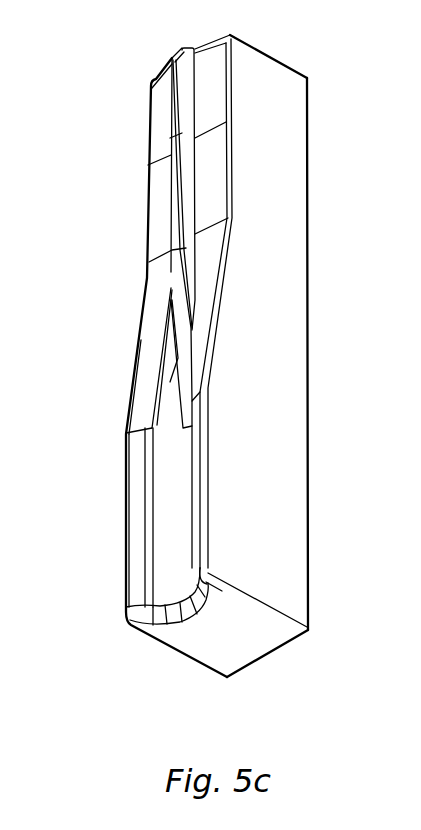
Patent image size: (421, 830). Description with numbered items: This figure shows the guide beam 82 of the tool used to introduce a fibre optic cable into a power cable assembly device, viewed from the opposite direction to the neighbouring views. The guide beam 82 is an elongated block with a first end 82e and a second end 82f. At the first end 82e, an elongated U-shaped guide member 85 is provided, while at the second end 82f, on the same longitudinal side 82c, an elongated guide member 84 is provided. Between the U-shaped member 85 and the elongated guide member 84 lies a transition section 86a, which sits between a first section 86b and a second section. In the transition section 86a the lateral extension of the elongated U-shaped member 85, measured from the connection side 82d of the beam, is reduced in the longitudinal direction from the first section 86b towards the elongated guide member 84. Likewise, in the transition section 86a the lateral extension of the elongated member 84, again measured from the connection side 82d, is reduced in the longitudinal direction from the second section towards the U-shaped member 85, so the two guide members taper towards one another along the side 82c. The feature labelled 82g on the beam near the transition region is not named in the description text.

The guide beam 82 is at (284, 326).
The longitudinal side 82c is at (127, 469).
The connection side 82d is at (309, 213).
The first end 82e is at (240, 642).
The second end 82f is at (268, 54).
The tab of block 82g is at (131, 385).
The elongated guide member 84 is at (163, 103).
The elongated U-shaped guide member 85 is at (165, 607).
The transition section 86a is at (118, 326).
The first section 86b is at (123, 153).